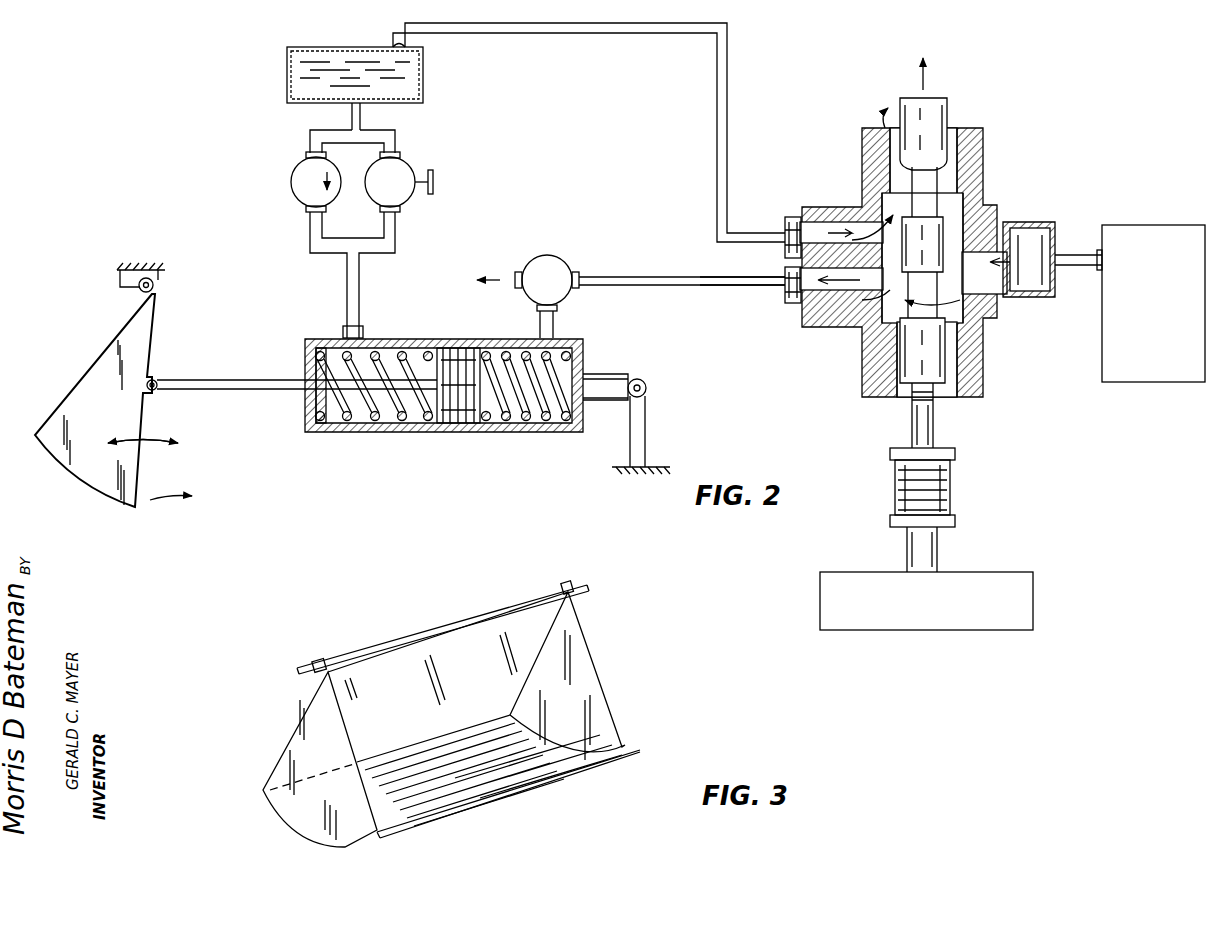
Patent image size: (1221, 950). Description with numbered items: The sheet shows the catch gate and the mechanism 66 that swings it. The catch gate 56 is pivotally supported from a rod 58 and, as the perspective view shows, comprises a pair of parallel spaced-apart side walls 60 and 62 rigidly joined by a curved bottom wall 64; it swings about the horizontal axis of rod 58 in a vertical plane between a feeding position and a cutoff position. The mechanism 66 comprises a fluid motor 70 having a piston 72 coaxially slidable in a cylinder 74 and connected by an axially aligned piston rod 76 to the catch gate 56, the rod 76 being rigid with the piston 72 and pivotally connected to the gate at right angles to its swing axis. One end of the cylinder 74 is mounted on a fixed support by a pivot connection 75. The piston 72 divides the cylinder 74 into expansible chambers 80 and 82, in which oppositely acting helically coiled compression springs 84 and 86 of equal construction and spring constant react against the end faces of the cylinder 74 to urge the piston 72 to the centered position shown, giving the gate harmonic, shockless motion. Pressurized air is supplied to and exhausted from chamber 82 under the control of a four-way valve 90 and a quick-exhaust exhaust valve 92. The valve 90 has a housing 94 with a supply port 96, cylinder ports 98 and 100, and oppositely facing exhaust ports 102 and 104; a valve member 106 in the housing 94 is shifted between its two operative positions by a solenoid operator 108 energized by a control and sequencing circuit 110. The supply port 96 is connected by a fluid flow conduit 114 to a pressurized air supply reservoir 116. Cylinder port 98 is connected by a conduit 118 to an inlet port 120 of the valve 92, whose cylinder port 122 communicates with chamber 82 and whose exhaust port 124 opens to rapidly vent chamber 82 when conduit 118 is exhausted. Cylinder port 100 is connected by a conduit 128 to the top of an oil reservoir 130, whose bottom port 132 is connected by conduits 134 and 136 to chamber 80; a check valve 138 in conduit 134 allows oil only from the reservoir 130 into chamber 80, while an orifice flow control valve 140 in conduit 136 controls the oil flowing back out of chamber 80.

In FIG. 2, the catch gate 56 is at (115, 497).
In FIG. 2, the rod 58 is at (156, 288).
In FIG. 3, the rod 58 is at (310, 660).
In FIG. 3, the side wall 60 is at (292, 737).
In FIG. 3, the side wall 62 is at (598, 660).
In FIG. 3, the curved bottom wall 64 is at (555, 782).
In FIG. 2, the mechanism 66 is at (495, 432).
In FIG. 2, the fluid motor 70 is at (540, 437).
In FIG. 2, the piston 72 is at (458, 430).
In FIG. 2, the cylinder 74 is at (583, 432).
In FIG. 2, the pivot connection 75 is at (646, 383).
In FIG. 2, the piston rod 76 is at (222, 380).
In FIG. 2, the expansible chamber 80 is at (336, 425).
In FIG. 2, the expansible chamber 82 is at (590, 380).
In FIG. 2, the compression spring 84 is at (386, 428).
In FIG. 2, the compression spring 86 is at (516, 432).
In FIG. 2, the four-way valve 90 is at (944, 254).
In FIG. 2, the quick-exhaust exhaust valve 92 is at (563, 260).
In FIG. 2, the housing 94 is at (985, 178).
In FIG. 2, the supply port 96 is at (1020, 262).
In FIG. 2, the cylinder port 98 is at (830, 318).
In FIG. 2, the cylinder port 100 is at (820, 212).
In FIG. 2, the exhaust port 102 is at (890, 400).
In FIG. 2, the exhaust port 104 is at (882, 127).
In FIG. 2, the valve member 106 is at (935, 240).
In FIG. 2, the solenoid operator 108 is at (955, 492).
In FIG. 2, the control and sequencing circuit 110 is at (998, 571).
In FIG. 2, the fluid flow conduit 114 is at (1080, 268).
In FIG. 2, the pressurized air supply reservoir 116 is at (1155, 384).
In FIG. 2, the fluid flow conduit 118 is at (767, 286).
In FIG. 2, the inlet port 120 is at (585, 276).
In FIG. 2, the cylinder port 122 is at (555, 318).
In FIG. 2, the exhaust port 124 is at (526, 262).
In FIG. 2, the fluid flow conduit 128 is at (490, 33).
In FIG. 2, the oil reservoir 130 is at (287, 80).
In FIG. 2, the bottom port 132 is at (362, 118).
In FIG. 2, the fluid flow conduit 134 is at (310, 235).
In FIG. 2, the fluid flow conduit 136 is at (397, 242).
In FIG. 2, the check valve 138 is at (291, 192).
In FIG. 2, the orifice flow control valve 140 is at (410, 200).